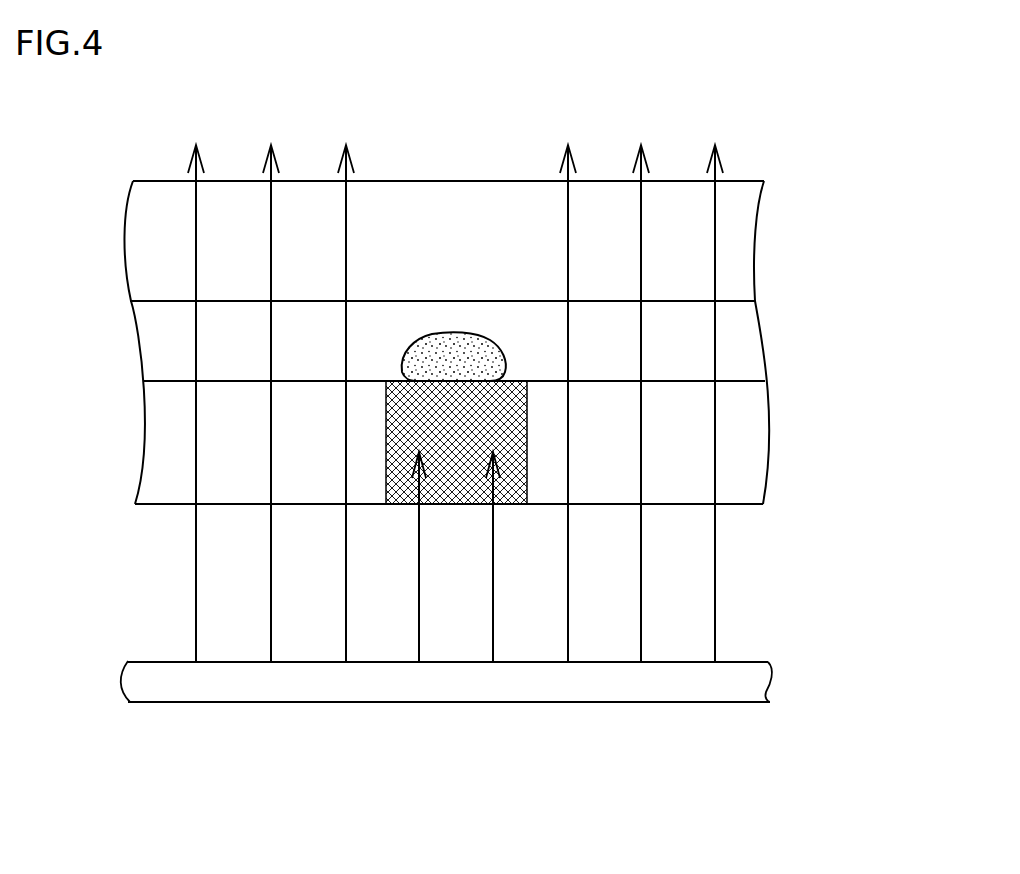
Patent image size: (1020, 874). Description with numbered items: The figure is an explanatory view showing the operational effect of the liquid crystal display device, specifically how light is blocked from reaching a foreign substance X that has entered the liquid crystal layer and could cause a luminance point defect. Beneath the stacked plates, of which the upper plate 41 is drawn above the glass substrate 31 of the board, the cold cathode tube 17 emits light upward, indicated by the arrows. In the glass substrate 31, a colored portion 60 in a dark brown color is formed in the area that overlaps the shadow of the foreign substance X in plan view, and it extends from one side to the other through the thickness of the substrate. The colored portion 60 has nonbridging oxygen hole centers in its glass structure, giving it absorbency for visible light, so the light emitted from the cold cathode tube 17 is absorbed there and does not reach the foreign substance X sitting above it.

The upper plate (first electrode 40) 41 is at (737, 266).
The glass substrate 31 is at (758, 440).
The cold cathode tube 17 is at (748, 683).
The colored portion 60 is at (517, 487).
The foreign substance X is at (445, 353).